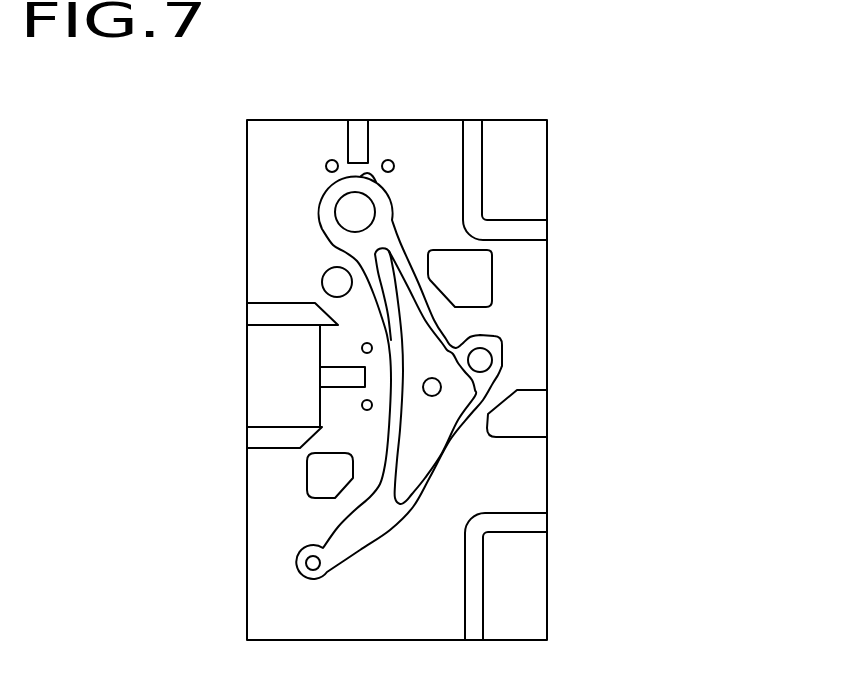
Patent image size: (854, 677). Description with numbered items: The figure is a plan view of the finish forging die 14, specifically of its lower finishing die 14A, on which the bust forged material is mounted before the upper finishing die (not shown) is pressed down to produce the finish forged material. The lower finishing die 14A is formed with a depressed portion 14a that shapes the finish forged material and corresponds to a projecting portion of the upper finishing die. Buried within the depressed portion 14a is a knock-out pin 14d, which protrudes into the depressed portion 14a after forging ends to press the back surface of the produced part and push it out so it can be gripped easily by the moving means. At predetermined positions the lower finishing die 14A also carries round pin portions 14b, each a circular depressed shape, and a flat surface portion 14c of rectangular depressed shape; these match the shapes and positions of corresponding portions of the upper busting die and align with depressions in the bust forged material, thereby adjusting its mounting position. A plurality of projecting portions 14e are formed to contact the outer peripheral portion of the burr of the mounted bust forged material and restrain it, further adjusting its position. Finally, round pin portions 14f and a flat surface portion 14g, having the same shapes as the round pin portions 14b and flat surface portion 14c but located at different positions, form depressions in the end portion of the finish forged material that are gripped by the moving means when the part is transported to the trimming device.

The finish forging die 14 is at (526, 376).
The lower finishing die 14A is at (582, 398).
The depressed portion 14a is at (412, 468).
The round pin portions 14b is at (390, 158).
The flat surface portion 14c is at (355, 125).
The knock-out pin 14d is at (437, 394).
The projecting portions 14e is at (337, 282).
The round pin portions 14f is at (360, 347).
The flat surface portion 14g is at (338, 371).